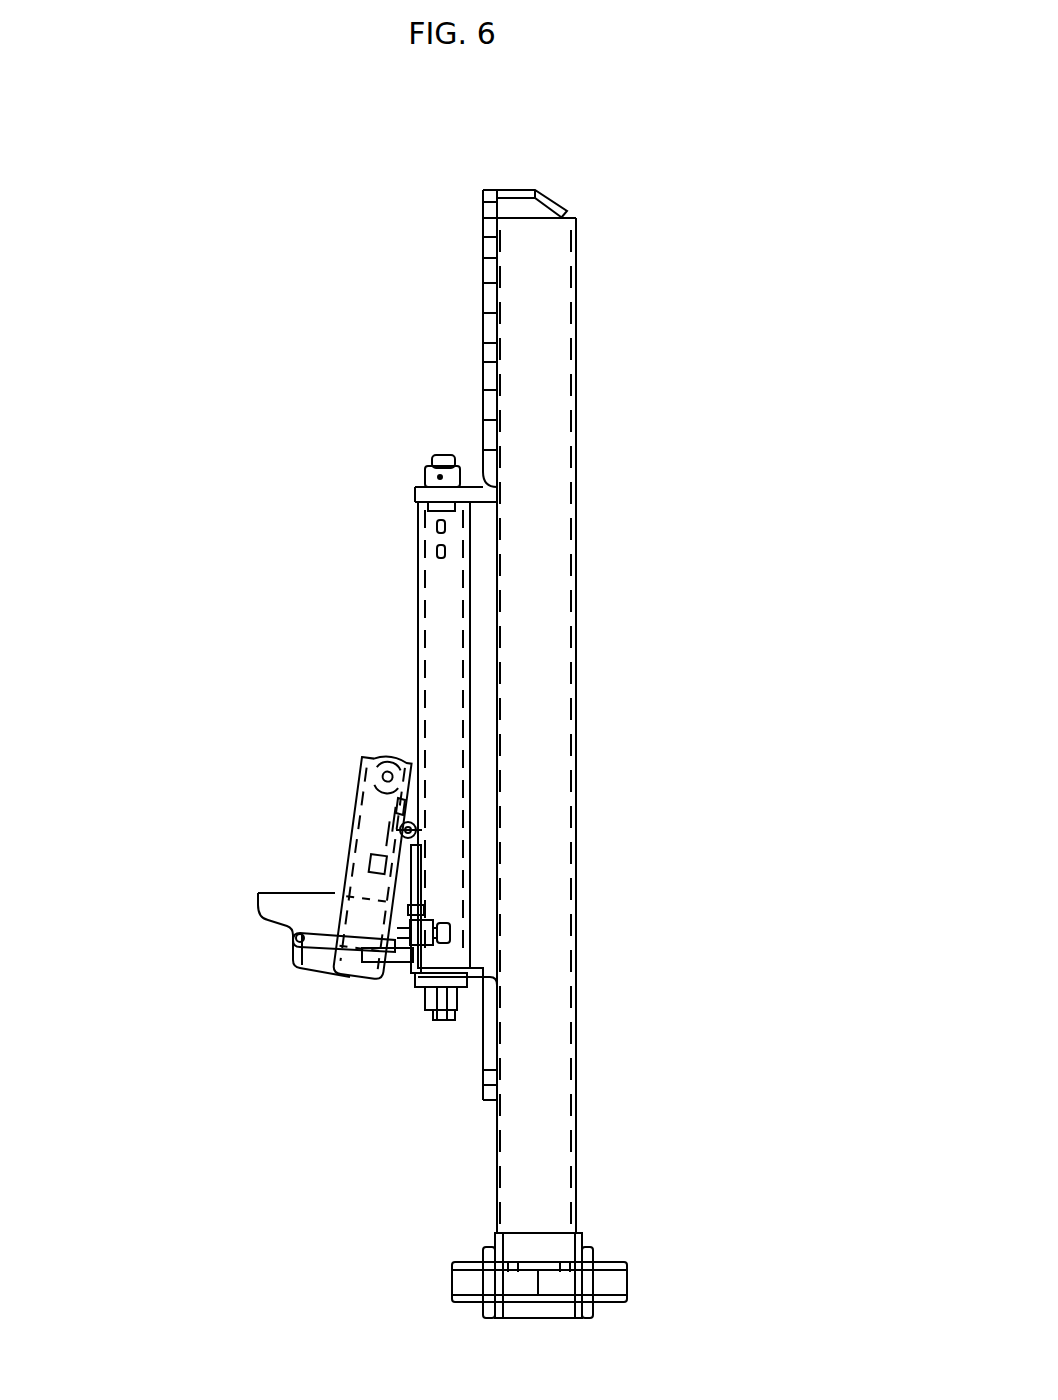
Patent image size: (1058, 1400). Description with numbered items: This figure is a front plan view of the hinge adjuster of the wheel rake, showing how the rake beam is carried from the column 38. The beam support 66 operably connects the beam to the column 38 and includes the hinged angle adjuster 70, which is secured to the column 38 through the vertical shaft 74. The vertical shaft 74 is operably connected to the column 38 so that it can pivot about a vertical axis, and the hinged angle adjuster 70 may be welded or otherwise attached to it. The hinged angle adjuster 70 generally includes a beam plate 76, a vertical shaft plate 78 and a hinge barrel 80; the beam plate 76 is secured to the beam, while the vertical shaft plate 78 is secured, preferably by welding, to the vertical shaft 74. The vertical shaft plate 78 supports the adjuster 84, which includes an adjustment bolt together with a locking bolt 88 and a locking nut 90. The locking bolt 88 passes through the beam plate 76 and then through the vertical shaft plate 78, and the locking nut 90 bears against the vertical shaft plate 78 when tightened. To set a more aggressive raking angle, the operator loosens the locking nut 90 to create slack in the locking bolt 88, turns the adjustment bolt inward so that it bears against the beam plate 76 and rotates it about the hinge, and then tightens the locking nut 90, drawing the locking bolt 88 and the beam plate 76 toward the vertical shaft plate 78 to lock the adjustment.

The column 38 is at (576, 500).
The vertical shaft 74 is at (418, 572).
The beam support 66 is at (340, 870).
The hinged angle adjuster 70 is at (383, 905).
The beam plate 76 is at (350, 937).
The vertical shaft plate 78 is at (425, 878).
The hinge barrel 80 is at (430, 798).
The adjuster 84 is at (450, 932).
The locking bolt 88 is at (398, 958).
The locking nut 90 is at (440, 1010).